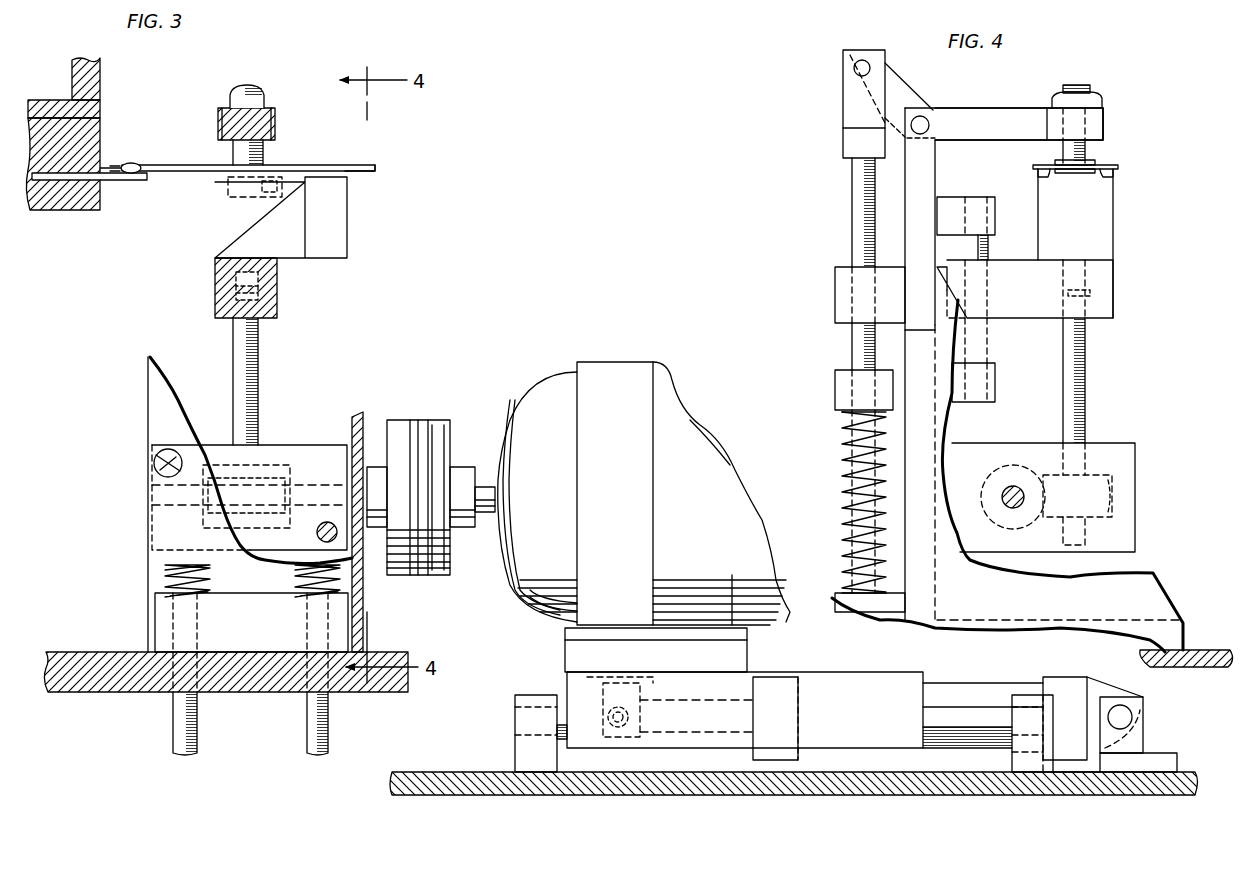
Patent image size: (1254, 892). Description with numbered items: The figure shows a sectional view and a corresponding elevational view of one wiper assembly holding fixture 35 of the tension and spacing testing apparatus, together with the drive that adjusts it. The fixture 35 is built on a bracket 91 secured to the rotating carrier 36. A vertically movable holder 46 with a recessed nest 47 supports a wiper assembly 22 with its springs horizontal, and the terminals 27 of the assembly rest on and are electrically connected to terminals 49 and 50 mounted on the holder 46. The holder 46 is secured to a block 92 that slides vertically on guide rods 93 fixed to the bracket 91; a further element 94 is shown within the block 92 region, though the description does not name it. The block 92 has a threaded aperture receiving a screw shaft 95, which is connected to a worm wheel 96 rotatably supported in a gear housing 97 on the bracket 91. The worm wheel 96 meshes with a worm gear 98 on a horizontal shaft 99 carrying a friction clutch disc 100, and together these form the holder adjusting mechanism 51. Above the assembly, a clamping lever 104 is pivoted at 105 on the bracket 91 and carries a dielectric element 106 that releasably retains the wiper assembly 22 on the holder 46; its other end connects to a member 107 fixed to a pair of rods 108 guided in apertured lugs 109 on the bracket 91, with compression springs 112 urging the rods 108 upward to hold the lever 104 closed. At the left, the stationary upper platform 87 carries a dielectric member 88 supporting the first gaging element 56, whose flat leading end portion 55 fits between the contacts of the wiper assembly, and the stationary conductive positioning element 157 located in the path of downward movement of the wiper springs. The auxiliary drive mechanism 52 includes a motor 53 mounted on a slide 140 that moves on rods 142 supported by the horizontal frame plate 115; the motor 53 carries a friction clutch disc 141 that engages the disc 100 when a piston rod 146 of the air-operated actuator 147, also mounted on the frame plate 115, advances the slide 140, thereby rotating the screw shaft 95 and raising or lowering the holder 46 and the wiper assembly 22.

In FIG. 3, the wiper assembly 22 is at (200, 165).
In FIG. 4, the wiper assembly 22 is at (1062, 163).
In FIG. 4, the terminal 27 is at (1040, 160).
In FIG. 3, the wiper assembly holding fixture 35 is at (138, 488).
In FIG. 4, the wiper assembly holding fixture 35 is at (895, 252).
In FIG. 3, the carrier 36 is at (90, 698).
In FIG. 4, the carrier 36 is at (1208, 650).
In FIG. 3, the holder 46 is at (232, 237).
In FIG. 4, the holder 46 is at (1100, 224).
In FIG. 3, the recessed nest 47 is at (240, 200).
In FIG. 3, the terminal 49 is at (364, 172).
In FIG. 4, the terminal 49 is at (1042, 180).
In FIG. 4, the terminal 50 is at (1112, 184).
In FIG. 4, the holder adjusting mechanism 51 is at (1100, 428).
In FIG. 3, the auxiliary drive mechanism 52 is at (612, 362).
In FIG. 3, the motor 53 is at (664, 420).
In FIG. 3, the leading end portion 55 is at (112, 163).
In FIG. 3, the first gaging element 56 is at (135, 163).
In FIG. 3, the upper platform 87 is at (55, 104).
In FIG. 3, the dielectric member 88 is at (76, 208).
In FIG. 3, the bracket 91 is at (360, 412).
In FIG. 4, the bracket 91 is at (918, 350).
In FIG. 3, the block 92 is at (275, 284).
In FIG. 4, the block 92 is at (1022, 318).
In FIG. 4, the guide rod 93 is at (990, 247).
In FIG. 3, the set screw 94 is at (232, 276).
In FIG. 4, the set screw 94 is at (1085, 285).
In FIG. 3, the screw shaft 95 is at (237, 382).
In FIG. 4, the screw shaft 95 is at (1080, 380).
In FIG. 3, the worm wheel 96 is at (230, 475).
In FIG. 4, the worm wheel 96 is at (1112, 494).
In FIG. 3, the gear housing 97 is at (278, 450).
In FIG. 4, the gear housing 97 is at (1125, 460).
In FIG. 4, the worm gear 98 is at (1012, 465).
In FIG. 3, the horizontal shaft 99 is at (310, 485).
In FIG. 4, the horizontal shaft 99 is at (1003, 490).
In FIG. 3, the friction clutch disc 100 is at (398, 425).
In FIG. 3, the clamping lever 104 is at (262, 124).
In FIG. 4, the clamping lever 104 is at (980, 122).
In FIG. 4, the pivot 105 is at (925, 118).
In FIG. 3, the dielectric element 106 is at (265, 150).
In FIG. 4, the dielectric element 106 is at (1087, 151).
In FIG. 4, the member 107 is at (845, 113).
In FIG. 3, the rod 108 is at (312, 735).
In FIG. 4, the rod 108 is at (852, 192).
In FIG. 3, the apertured lug 109 is at (236, 610).
In FIG. 4, the apertured lug 109 is at (840, 298).
In FIG. 3, the compression spring 112 is at (165, 570).
In FIG. 4, the compression spring 112 is at (843, 484).
In FIG. 3, the horizontal frame plate 115 is at (466, 780).
In FIG. 3, the slide 140 is at (823, 680).
In FIG. 3, the friction clutch disc 141 is at (440, 430).
In FIG. 3, the rod 142 is at (945, 715).
In FIG. 3, the piston rod 146 is at (692, 737).
In FIG. 3, the air-operated actuator 147 is at (992, 692).
In FIG. 3, the conductive positioning element 157 is at (108, 182).